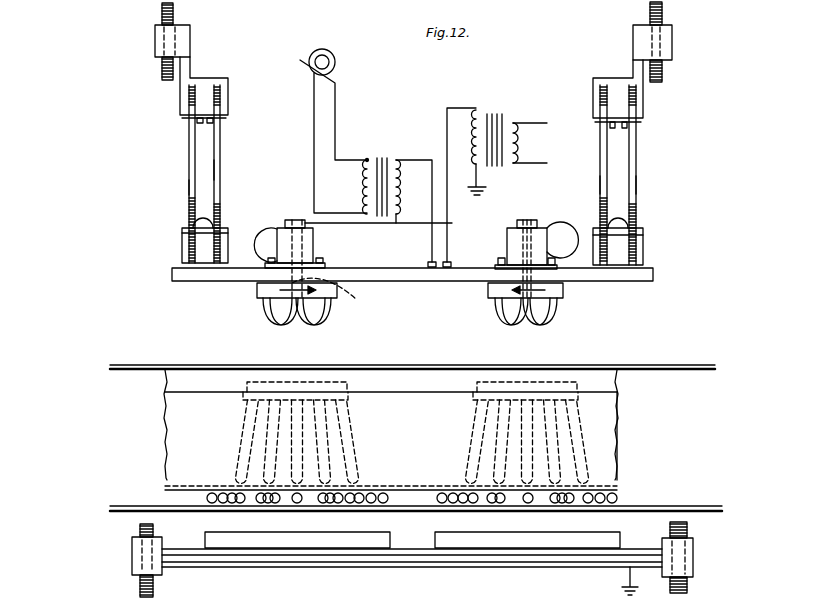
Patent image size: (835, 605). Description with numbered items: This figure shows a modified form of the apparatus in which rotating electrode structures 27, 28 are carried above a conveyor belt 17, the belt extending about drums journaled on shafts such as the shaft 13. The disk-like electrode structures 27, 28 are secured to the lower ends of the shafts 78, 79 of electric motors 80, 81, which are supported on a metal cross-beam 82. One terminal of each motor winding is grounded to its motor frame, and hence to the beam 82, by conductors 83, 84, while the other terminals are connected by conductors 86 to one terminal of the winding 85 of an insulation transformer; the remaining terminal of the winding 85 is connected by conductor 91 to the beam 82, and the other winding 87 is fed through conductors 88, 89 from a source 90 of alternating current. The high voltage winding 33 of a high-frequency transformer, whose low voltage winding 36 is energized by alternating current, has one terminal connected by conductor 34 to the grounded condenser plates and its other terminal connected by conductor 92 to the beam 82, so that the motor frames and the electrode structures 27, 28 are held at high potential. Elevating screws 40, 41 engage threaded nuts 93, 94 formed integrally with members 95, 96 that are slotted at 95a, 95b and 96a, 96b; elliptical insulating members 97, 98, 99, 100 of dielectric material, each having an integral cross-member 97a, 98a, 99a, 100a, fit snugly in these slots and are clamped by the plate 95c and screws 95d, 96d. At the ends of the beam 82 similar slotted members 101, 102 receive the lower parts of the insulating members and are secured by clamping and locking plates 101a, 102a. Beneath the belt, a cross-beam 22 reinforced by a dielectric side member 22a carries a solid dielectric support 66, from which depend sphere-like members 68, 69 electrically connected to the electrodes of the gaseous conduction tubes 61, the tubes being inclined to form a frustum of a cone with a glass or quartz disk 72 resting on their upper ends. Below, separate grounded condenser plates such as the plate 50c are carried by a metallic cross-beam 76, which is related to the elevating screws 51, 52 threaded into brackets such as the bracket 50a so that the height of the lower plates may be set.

The shaft 13 is at (237, 43).
The conveyor belt 17 is at (170, 366).
The cross-beam 22 is at (617, 380).
The side member 22a is at (617, 438).
The electrode structure 27 is at (320, 303).
The electrode structure 28 is at (488, 292).
The high voltage winding 33 is at (476, 110).
The conductor 34 is at (480, 170).
The low voltage winding 36 is at (513, 123).
The rotatable screw 40 is at (162, 68).
The rotatable screw 41 is at (663, 15).
The bracket 50a is at (488, 530).
The condenser plate 50c is at (245, 540).
The screw 51 is at (153, 590).
The screw 52 is at (688, 588).
The gaseous conduction device 61 is at (246, 447).
The dielectric support 66 is at (425, 486).
The sphere-like member 68 is at (362, 503).
The sphere-like member 69 is at (210, 503).
The disk-like member 72 is at (348, 388).
The cross-beam 76 is at (292, 562).
The shaft 78 is at (333, 292).
The shaft 79 is at (533, 241).
The electric motor 80 is at (313, 244).
The electric motor 81 is at (507, 246).
The cross-beam 82 is at (424, 280).
The conductor 83 is at (264, 226).
The conductor 84 is at (574, 224).
The winding 85 is at (398, 160).
The conductor 86 is at (370, 225).
The winding 87 is at (368, 160).
The conductor 88 is at (336, 114).
The conductor 89 is at (314, 152).
The source of alternating current 90 is at (336, 61).
The conductor 91 is at (430, 247).
The conductor 92 is at (447, 128).
The threaded sleeve or nut 93 is at (160, 37).
The threaded sleeve or nut 94 is at (672, 46).
The slotted member 95 is at (205, 80).
The slot 95a is at (189, 98).
The slot 95b is at (220, 100).
The plate 95c is at (228, 117).
The screw 95d is at (210, 125).
The slotted member 96 is at (598, 80).
The slot 96a is at (600, 90).
The slot 96b is at (640, 104).
The screw 96d is at (625, 128).
The insulating member 97 is at (189, 165).
The cross-member 97a is at (189, 186).
The insulating member 98 is at (220, 148).
The cross-member 98a is at (220, 170).
The insulating member 99 is at (600, 162).
The cross-member 99a is at (600, 184).
The insulating member 100 is at (637, 170).
The cross-member 100a is at (637, 186).
The member 101 is at (182, 250).
The clamping and locking plate 101a is at (182, 229).
The member 102 is at (620, 248).
The clamping and locking plate 102a is at (622, 230).